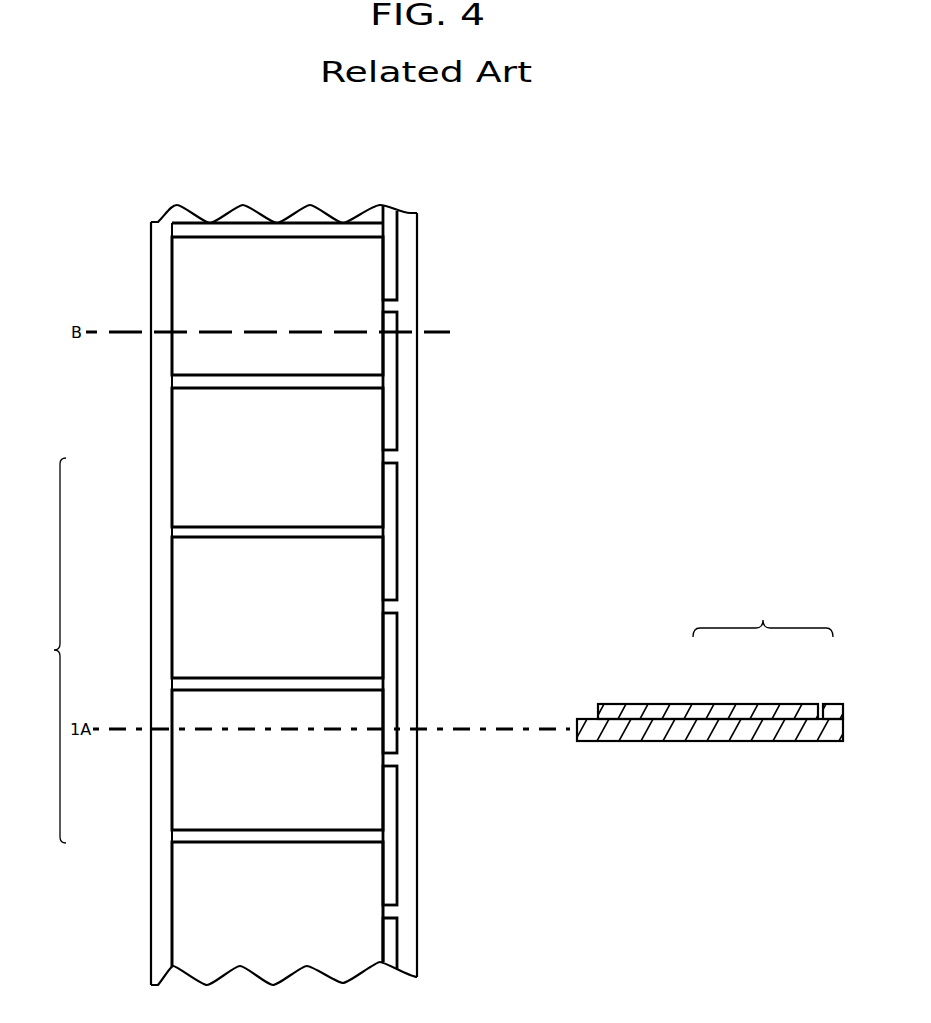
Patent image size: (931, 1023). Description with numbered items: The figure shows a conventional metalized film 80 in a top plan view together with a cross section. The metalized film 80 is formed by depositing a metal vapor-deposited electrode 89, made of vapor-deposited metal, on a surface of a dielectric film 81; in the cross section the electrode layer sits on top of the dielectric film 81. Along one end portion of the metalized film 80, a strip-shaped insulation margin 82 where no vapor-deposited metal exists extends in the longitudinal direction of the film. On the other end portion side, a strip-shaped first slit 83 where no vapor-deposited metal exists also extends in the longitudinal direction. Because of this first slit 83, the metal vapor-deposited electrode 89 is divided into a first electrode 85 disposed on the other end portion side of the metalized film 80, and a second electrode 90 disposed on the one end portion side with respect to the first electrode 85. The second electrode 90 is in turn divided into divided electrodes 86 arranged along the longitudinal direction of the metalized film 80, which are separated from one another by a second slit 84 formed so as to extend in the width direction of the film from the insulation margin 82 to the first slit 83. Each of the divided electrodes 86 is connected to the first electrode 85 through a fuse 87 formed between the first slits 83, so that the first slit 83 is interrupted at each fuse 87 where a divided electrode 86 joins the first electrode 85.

The metalized film 80 is at (176, 195).
The dielectric film 81 is at (632, 737).
The insulation margin 82 is at (166, 256).
The first slit 83 is at (392, 405).
The second slit 84 is at (225, 380).
The first electrode 85 is at (405, 259).
The divided electrode 86 is at (228, 463).
The fuse 87 is at (388, 455).
The metal vapor-deposited electrode 89 is at (763, 616).
The second electrode 90 is at (45, 650).